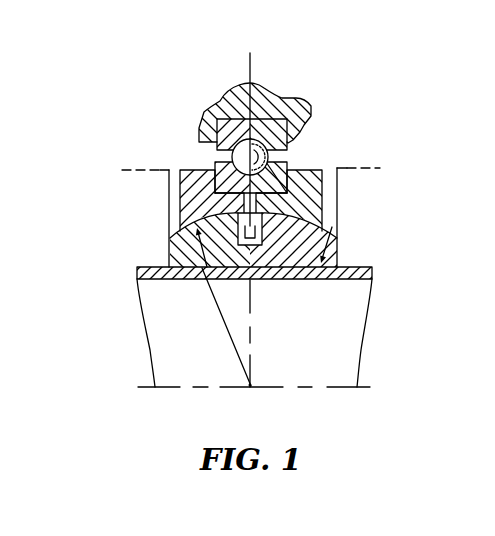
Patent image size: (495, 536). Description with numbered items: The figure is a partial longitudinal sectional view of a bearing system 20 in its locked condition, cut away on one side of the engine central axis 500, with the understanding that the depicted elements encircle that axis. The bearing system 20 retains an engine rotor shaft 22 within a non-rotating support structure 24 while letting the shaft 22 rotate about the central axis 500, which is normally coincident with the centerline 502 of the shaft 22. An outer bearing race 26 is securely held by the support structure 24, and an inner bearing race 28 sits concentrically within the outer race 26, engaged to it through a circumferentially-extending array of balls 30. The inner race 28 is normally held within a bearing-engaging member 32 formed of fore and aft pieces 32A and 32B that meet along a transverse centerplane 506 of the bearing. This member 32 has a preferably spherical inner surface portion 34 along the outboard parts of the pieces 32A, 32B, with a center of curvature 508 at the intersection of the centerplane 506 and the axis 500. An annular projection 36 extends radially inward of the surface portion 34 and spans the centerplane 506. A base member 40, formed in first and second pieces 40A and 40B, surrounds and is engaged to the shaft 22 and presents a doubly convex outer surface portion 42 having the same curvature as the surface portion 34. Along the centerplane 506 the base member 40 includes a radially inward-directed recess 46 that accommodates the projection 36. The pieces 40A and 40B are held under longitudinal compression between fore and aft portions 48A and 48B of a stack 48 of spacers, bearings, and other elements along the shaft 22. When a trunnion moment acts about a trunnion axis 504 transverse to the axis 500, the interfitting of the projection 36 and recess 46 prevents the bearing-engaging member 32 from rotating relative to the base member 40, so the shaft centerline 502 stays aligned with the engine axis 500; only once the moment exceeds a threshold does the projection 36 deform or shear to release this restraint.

The bearing system 20 is at (161, 114).
The engine rotor shaft 22 is at (200, 278).
The non-rotating support structure 24 is at (311, 108).
The outer bearing race 26 is at (216, 120).
The inner bearing race 28 is at (214, 164).
The balls 30 is at (270, 156).
The bearing-engaging member 32 is at (227, 183).
The fore piece of bearing-engaging member 32A is at (172, 186).
The aft piece of bearing-engaging member 32B is at (322, 170).
The inner surface portion 34 is at (335, 237).
The annular projection 36 is at (272, 262).
The base member 40 is at (340, 269).
The first piece of base member 40A is at (180, 250).
The second piece of base member 40B is at (337, 255).
The outer surface portion 42 is at (332, 228).
The recess 46 is at (257, 262).
The stack 48 is at (158, 170).
The fore portion of stack 48A is at (158, 236).
The aft portion of stack 48B is at (424, 202).
The engine central axis 500 is at (208, 388).
The shaft centerline 502 is at (280, 390).
The trunnion axis 504 is at (255, 386).
The transverse centerplane 506 is at (252, 66).
The center of curvature 508 is at (250, 386).